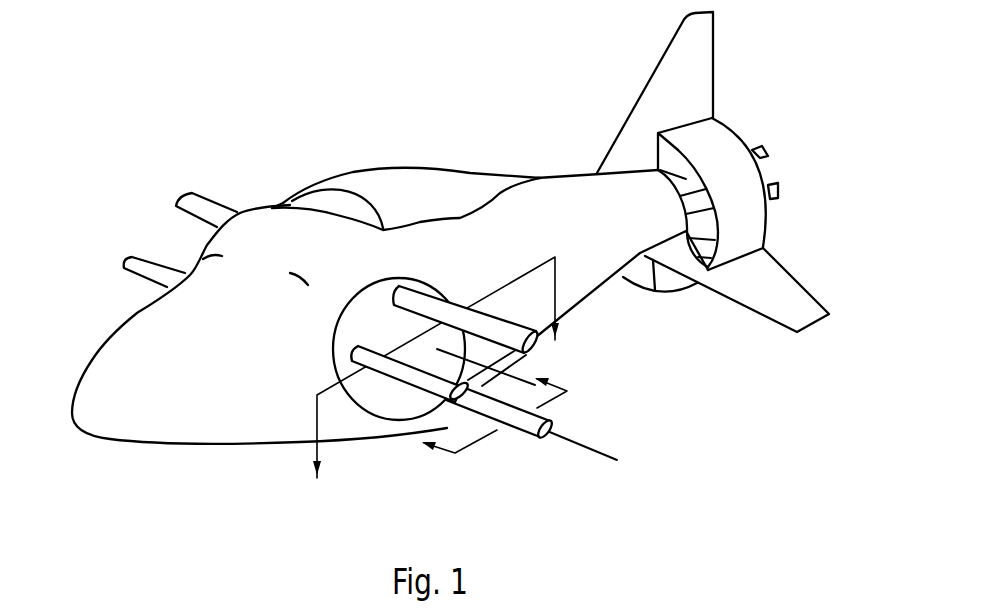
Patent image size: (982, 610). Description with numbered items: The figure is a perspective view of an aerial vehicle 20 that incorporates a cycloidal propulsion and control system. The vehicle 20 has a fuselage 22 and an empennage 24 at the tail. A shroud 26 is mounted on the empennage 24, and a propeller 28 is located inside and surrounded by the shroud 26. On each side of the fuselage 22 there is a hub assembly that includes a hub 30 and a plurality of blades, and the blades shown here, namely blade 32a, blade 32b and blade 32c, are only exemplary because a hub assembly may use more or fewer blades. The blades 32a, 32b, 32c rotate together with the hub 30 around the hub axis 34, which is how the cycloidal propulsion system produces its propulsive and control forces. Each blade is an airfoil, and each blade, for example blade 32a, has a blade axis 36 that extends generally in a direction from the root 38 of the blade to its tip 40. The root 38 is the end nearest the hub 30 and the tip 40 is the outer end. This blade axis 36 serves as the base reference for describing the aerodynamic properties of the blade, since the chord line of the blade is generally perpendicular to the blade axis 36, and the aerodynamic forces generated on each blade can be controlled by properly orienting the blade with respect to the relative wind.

The aerial vehicle 20 is at (257, 145).
The fuselage 22 is at (138, 345).
The empennage 24 is at (637, 186).
The shroud 26 is at (720, 143).
The propeller 28 is at (703, 219).
The hub 30 is at (372, 412).
The blade 32a is at (531, 429).
The blade 32b is at (540, 344).
The blade 32c is at (348, 350).
The hub axis 34 is at (500, 368).
The blade axis 36 is at (576, 437).
The root 38 is at (450, 396).
The tip 40 is at (541, 437).